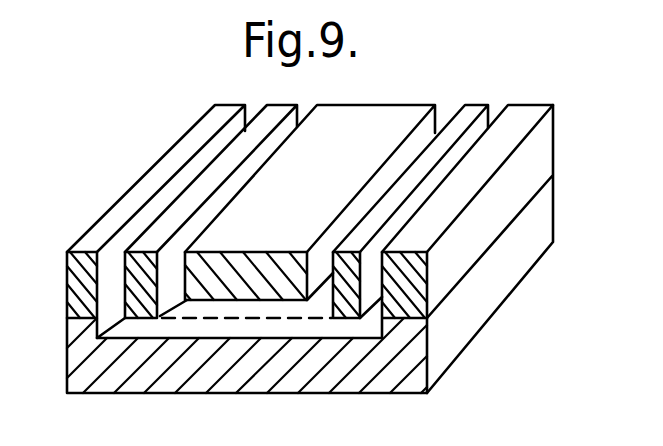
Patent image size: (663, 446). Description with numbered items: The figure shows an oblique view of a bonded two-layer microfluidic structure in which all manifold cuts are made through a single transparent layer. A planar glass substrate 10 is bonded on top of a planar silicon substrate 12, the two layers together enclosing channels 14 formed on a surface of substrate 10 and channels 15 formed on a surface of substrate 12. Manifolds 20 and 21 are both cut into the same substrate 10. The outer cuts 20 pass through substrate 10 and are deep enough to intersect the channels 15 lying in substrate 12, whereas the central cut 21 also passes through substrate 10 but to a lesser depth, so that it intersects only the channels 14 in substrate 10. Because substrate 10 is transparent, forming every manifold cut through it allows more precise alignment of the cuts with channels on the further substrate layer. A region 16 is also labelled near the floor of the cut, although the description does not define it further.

The planar substrate 10 is at (76, 283).
The planar substrate 12 is at (72, 353).
The channels 14 is at (298, 305).
The channels 15 is at (149, 331).
The recess region 16 is at (243, 307).
The manifold cut 20 is at (256, 120).
The manifold cut 21 is at (420, 133).